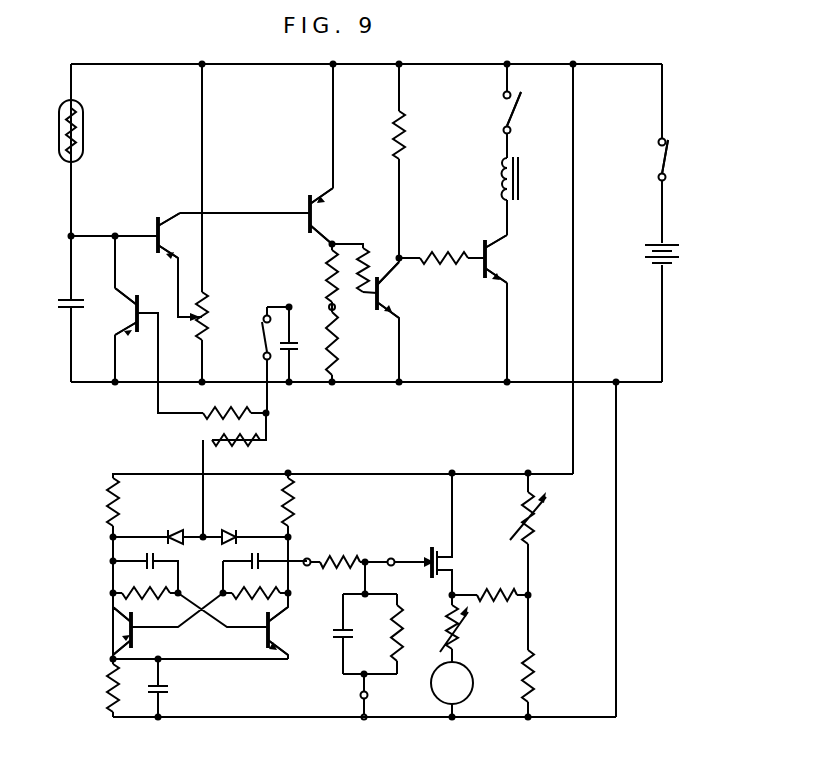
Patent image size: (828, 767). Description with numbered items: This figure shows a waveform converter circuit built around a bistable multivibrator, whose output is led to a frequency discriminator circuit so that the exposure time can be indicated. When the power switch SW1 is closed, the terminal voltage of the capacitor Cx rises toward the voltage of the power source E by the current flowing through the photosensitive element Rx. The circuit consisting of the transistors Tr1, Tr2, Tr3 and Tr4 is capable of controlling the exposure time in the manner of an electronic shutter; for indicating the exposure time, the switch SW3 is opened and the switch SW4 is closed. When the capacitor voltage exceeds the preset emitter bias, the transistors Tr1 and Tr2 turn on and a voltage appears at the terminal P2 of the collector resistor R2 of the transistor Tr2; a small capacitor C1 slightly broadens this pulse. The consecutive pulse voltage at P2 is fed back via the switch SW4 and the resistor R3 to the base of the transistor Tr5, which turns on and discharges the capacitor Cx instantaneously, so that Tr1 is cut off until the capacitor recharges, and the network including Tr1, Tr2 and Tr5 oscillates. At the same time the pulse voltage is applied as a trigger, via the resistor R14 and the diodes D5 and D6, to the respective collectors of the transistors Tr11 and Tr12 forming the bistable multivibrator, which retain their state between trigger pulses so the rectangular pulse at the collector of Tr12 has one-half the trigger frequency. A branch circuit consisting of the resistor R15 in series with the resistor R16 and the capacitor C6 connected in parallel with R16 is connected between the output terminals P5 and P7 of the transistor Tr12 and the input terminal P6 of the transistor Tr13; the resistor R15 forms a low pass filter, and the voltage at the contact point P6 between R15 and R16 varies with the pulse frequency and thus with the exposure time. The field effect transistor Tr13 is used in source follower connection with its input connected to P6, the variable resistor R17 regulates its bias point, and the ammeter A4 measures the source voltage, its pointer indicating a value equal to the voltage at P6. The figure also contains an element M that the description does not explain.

The photosensitive element Rx is at (83, 130).
The capacitor Cx is at (60, 304).
The transistor Tr1 is at (162, 236).
The transistor Tr5 is at (130, 312).
The switch SW4 is at (260, 330).
The terminal of resistor R2 P2 is at (328, 307).
The capacitor C1 is at (294, 346).
The collector resistor R2 is at (336, 360).
The transistor Tr2 is at (318, 216).
The transistor Tr3 is at (384, 294).
The transistor Tr4 is at (492, 258).
The switch SW3 is at (518, 98).
The relay coil M is at (519, 180).
The power switch SW1 is at (666, 146).
The power source E is at (666, 245).
The resistor R3 is at (228, 404).
The resistor R14 is at (250, 446).
The diode D5 is at (182, 532).
The diode D6 is at (252, 532).
The output terminal P5 is at (310, 558).
The input terminal P6 is at (392, 558).
The resistor R15 is at (324, 558).
The field effect transistor Tr13 is at (442, 564).
The variable resistor R17 is at (535, 532).
The capacitor C6 is at (344, 634).
The resistor R16 is at (414, 632).
The ammeter A4 is at (472, 678).
The output terminal P7 is at (369, 698).
The transistor Tr11 is at (126, 624).
The transistor Tr12 is at (276, 628).